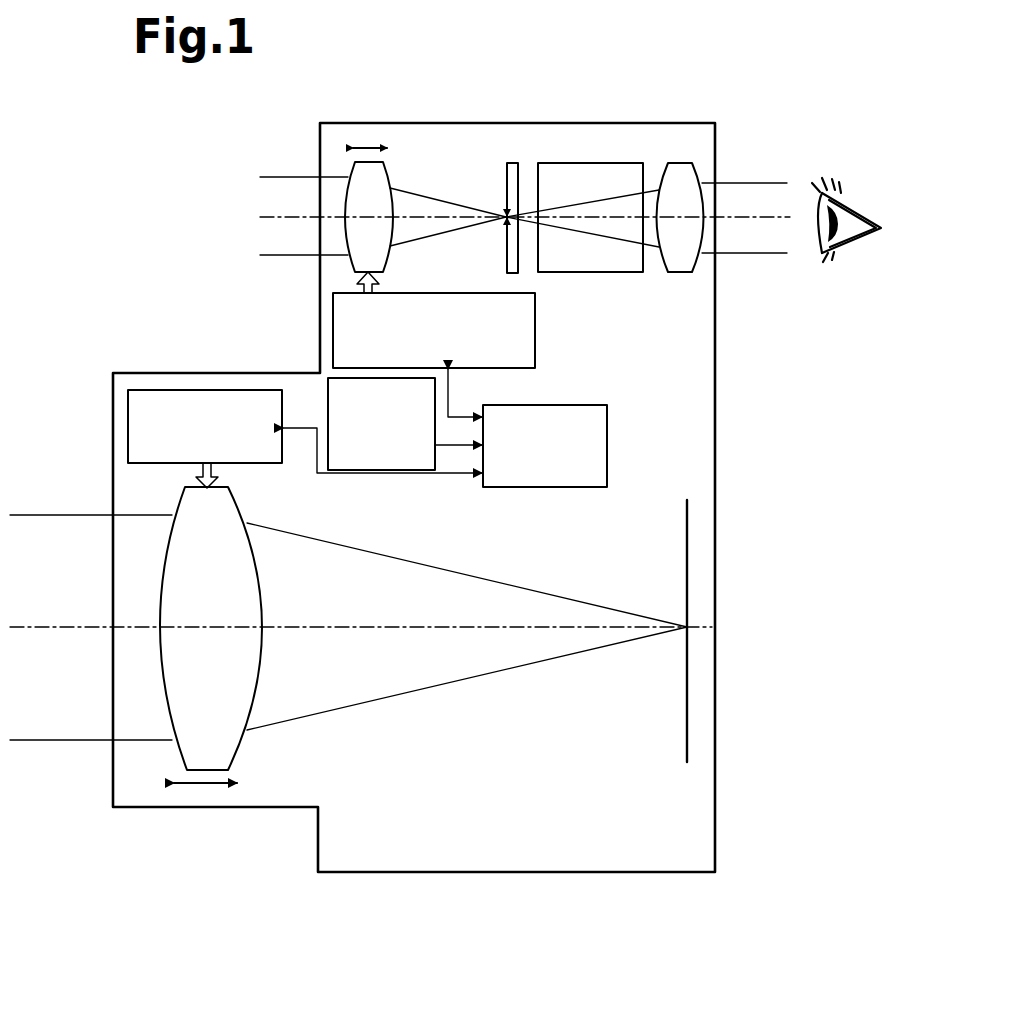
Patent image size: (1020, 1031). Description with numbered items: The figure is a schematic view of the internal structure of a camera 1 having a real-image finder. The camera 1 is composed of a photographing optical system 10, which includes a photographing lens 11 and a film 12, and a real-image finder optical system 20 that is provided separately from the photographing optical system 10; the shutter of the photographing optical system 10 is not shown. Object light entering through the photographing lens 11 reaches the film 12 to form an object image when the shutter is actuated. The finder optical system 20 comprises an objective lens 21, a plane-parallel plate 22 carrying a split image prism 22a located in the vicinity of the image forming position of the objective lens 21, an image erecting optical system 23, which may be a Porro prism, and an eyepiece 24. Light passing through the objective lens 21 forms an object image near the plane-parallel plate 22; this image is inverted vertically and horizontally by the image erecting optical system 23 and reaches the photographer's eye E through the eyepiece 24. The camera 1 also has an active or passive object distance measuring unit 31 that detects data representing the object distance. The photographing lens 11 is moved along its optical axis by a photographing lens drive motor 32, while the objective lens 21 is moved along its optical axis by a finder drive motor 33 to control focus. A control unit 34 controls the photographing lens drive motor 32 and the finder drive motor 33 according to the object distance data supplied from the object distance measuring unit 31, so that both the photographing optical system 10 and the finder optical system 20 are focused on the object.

The camera 1 is at (724, 483).
The photographing optical system 10 is at (432, 825).
The photographing lens 11 is at (215, 732).
The film 12 is at (687, 708).
The real-image finder optical system 20 is at (549, 137).
The objective lens 21 is at (352, 168).
The plane-parallel plate 22 is at (507, 262).
The split image prism 22a is at (499, 212).
The image erecting optical system 23 is at (588, 258).
The eyepiece 24 is at (682, 265).
The object distance measuring unit 31 is at (328, 393).
The photographing lens drive motor 32 is at (172, 390).
The finder drive motor 33 is at (333, 310).
The control unit 34 is at (607, 447).
The photographer's eye E is at (856, 194).